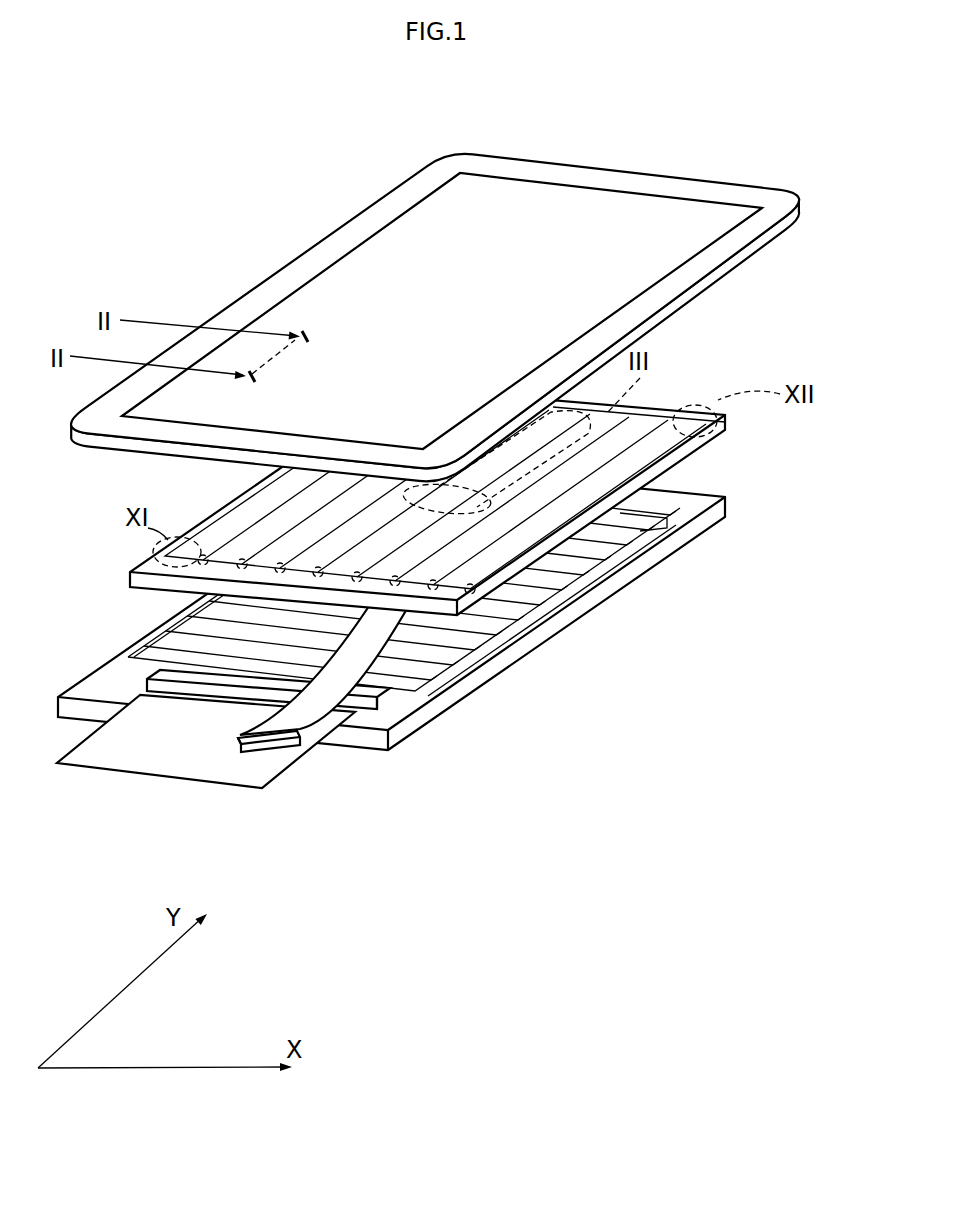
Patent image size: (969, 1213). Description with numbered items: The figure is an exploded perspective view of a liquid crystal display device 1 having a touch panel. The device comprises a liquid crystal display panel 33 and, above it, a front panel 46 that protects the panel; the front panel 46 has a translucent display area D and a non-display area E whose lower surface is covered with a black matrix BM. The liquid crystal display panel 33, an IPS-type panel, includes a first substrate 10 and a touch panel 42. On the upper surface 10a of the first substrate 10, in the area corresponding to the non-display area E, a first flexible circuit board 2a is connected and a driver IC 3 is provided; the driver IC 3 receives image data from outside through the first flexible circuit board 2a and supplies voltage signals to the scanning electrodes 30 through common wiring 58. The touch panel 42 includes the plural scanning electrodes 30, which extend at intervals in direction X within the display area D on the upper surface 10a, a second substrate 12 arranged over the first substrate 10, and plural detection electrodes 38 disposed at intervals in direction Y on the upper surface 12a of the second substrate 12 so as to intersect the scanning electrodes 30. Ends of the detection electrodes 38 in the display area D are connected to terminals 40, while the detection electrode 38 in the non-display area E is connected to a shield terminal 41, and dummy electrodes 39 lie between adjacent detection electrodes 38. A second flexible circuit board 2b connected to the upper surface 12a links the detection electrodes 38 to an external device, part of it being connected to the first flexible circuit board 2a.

The liquid crystal display device 1 is at (765, 115).
The front panel 46 is at (767, 179).
The display area D is at (511, 197).
The non-display area E is at (576, 182).
The black matrix BM is at (628, 178).
The dummy electrodes 39 is at (622, 405).
The detection electrodes 38 is at (683, 410).
The second substrate 12 is at (727, 418).
The scanning electrodes 30 is at (640, 520).
The first substrate 10 is at (828, 515).
The touch panel 42 is at (783, 413).
The liquid crystal display panel 33 is at (828, 517).
The terminals 40 is at (245, 564).
The shield terminal 41 is at (157, 553).
The upper surface 10a is at (122, 660).
The first flexible circuit board 2a is at (215, 765).
The second flexible circuit board 2b is at (370, 640).
The driver IC 3 is at (378, 698).
The upper surface 12a is at (480, 574).
The common wiring 58 is at (572, 608).